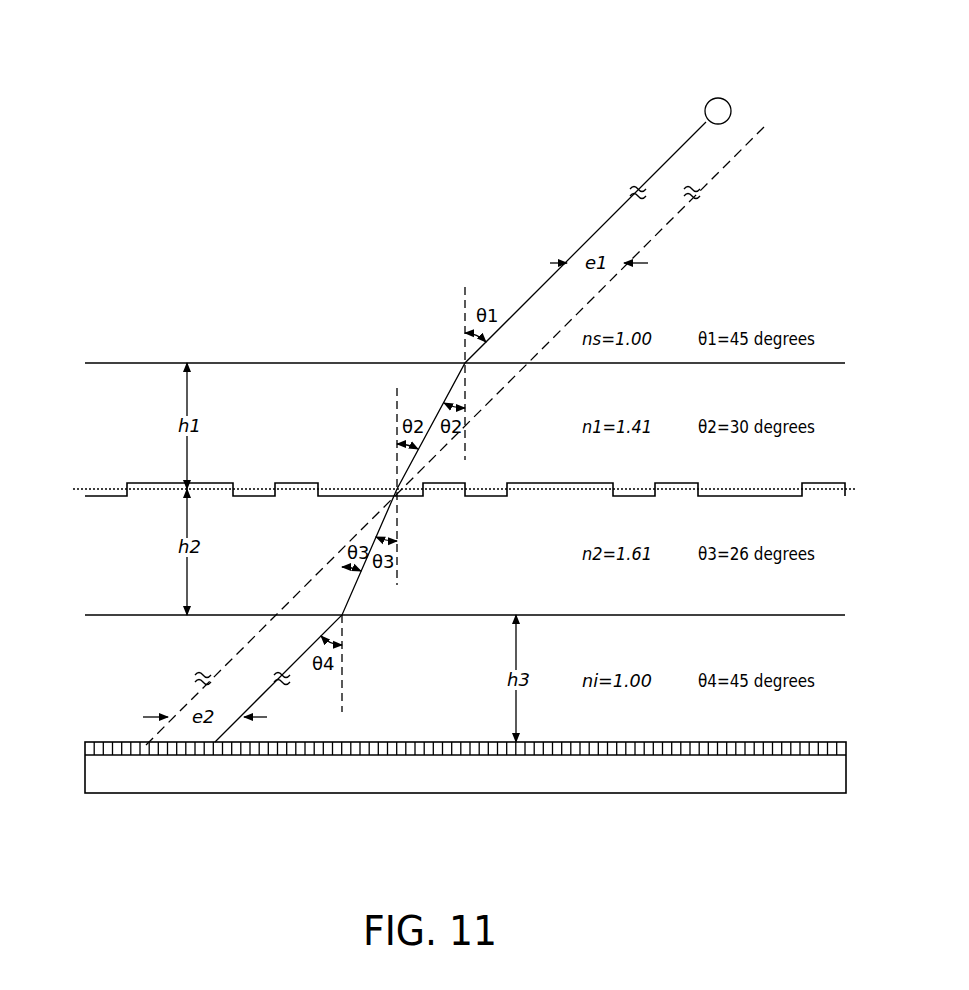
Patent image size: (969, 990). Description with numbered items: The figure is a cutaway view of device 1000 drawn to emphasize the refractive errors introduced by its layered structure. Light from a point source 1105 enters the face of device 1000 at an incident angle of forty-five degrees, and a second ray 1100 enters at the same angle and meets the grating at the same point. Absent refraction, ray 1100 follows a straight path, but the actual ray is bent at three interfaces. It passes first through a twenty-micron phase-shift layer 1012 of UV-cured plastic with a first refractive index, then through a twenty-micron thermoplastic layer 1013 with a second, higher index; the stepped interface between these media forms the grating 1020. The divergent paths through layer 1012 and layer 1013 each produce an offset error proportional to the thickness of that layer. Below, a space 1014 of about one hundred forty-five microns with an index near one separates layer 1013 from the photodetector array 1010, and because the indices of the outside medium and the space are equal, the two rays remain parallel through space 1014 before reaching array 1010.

The device 1000 is at (234, 43).
The point source 1105 is at (705, 111).
The ray 1100 is at (655, 232).
The phase-shift layer 1012 is at (465, 400).
The grating 1020 is at (99, 488).
The layer 1013 is at (465, 572).
The space 1014 is at (465, 678).
The array 1010 is at (465, 767).